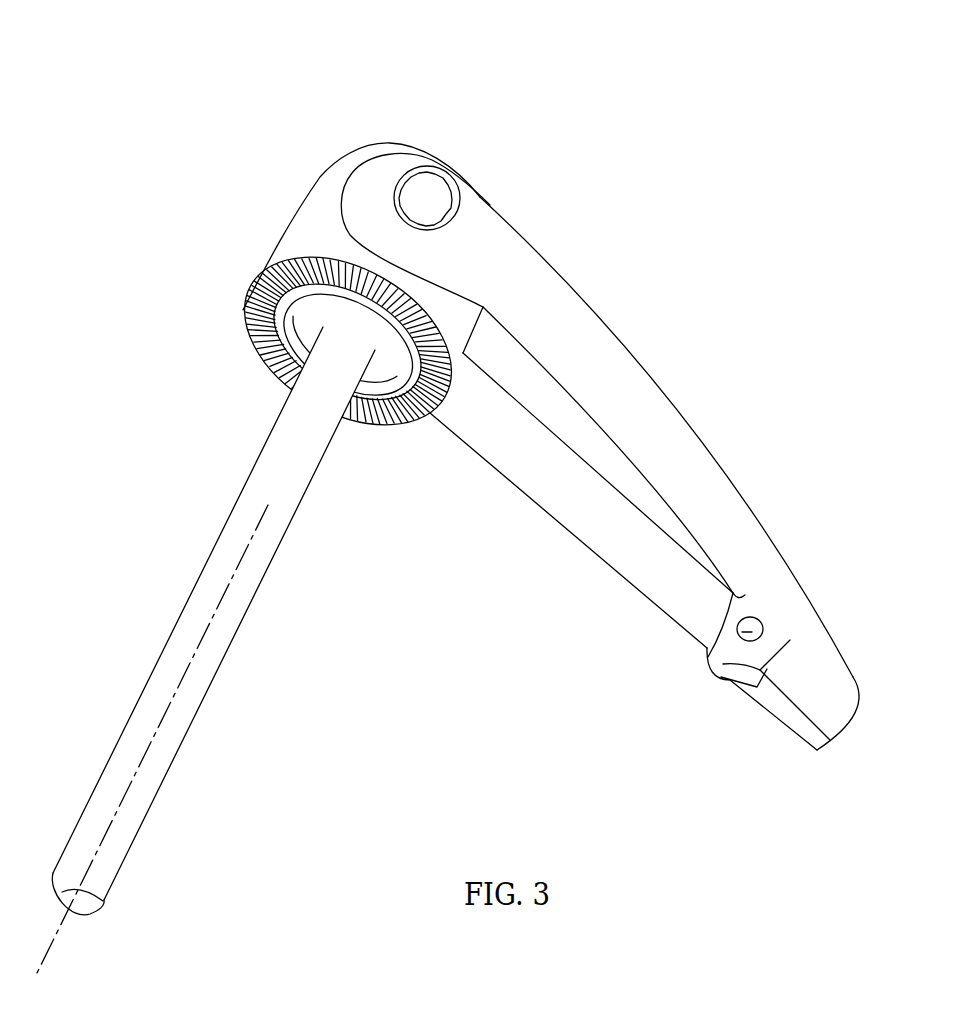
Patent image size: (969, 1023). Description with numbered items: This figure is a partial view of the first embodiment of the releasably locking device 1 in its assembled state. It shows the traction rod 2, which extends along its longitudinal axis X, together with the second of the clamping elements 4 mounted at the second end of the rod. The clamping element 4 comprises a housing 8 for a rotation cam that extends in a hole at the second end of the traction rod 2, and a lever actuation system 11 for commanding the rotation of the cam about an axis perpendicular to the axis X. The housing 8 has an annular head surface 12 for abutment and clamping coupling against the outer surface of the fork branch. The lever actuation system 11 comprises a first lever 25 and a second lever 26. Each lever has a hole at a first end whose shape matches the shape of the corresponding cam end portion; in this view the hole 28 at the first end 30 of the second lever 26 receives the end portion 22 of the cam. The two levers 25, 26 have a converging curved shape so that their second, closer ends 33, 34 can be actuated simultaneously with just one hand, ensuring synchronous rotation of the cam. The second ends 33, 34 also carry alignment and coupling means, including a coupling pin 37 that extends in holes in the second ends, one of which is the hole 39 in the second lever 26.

The tool assembly 1 is at (221, 118).
The traction rod 2 is at (245, 598).
The second clamping element 4 is at (545, 186).
The housing 8 is at (293, 222).
The lever actuation system 11 is at (672, 312).
The annular head surface 12 is at (253, 353).
The end portion 22 is at (431, 187).
The first lever 25 is at (573, 493).
The second lever 26 is at (662, 408).
The hole 28 is at (436, 190).
The first end 30 is at (380, 183).
The second end 33 is at (817, 750).
The second end 34 is at (853, 677).
The coupling pin 37 is at (720, 664).
The hole 39 is at (761, 620).
The axis X is at (176, 672).